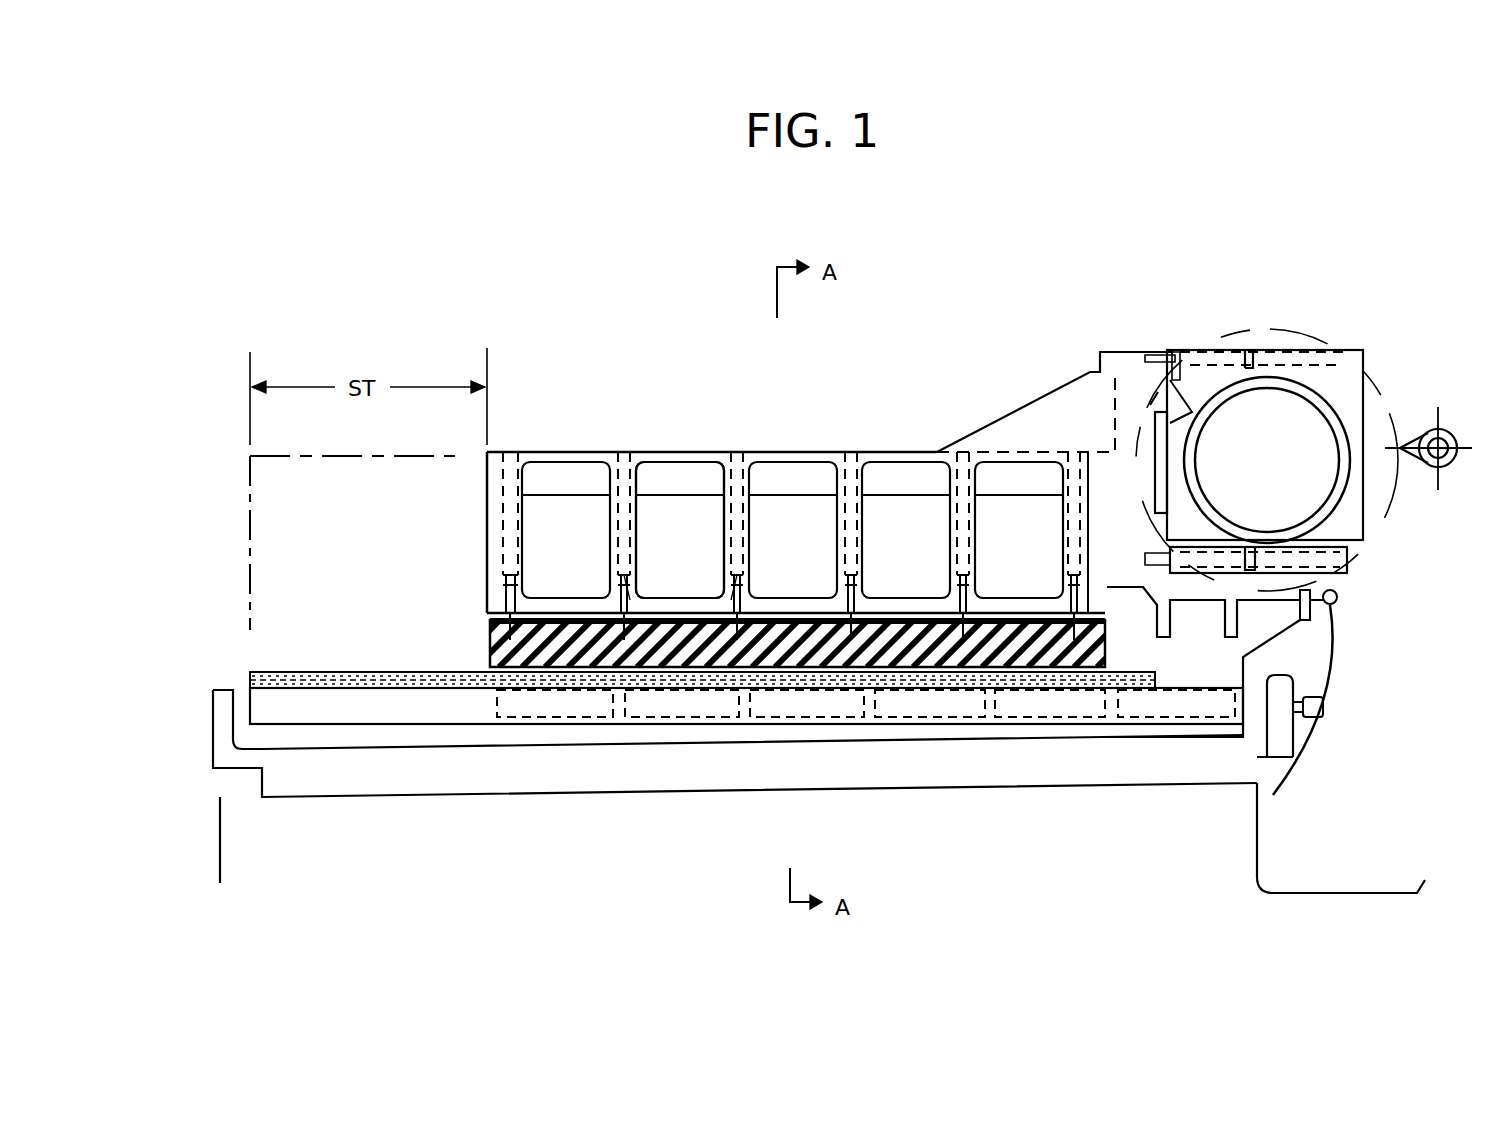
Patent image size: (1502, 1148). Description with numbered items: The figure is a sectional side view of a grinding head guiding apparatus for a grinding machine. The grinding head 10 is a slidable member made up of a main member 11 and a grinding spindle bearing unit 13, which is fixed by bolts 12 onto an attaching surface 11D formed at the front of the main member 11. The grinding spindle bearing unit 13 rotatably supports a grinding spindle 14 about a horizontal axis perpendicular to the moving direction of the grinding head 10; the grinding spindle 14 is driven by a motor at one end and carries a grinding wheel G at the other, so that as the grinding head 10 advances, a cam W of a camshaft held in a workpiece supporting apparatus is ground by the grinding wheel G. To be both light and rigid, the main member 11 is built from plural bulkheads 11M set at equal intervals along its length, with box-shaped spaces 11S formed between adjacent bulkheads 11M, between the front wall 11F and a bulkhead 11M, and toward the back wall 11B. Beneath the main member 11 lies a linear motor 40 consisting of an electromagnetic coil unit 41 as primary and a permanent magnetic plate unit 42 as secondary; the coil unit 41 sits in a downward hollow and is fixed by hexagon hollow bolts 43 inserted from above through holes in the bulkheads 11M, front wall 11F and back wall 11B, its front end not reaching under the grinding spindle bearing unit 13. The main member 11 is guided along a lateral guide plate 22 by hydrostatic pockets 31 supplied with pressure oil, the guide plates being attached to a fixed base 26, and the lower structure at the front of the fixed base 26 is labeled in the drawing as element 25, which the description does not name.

The grinding head 10 is at (893, 452).
The main member 11 is at (680, 460).
The back wall 11B is at (510, 488).
The box-shaped spaces 11S is at (668, 488).
The bulkheads 11M is at (848, 477).
The front wall 11F is at (1108, 468).
The attaching surface 11D is at (1170, 372).
The bolts 12 is at (1188, 352).
The grinding spindle bearing unit 13 is at (1337, 377).
The grinding spindle 14 is at (1310, 493).
The lateral guide plate 22 is at (365, 710).
The base 25 is at (1233, 862).
The fixed base 26 is at (932, 770).
The hydrostatic pockets 31 is at (765, 700).
The linear motor 40 is at (486, 667).
The electromagnetic coil unit 41 is at (540, 672).
The permanent magnetic plate unit 42 is at (450, 683).
The bolts 43 is at (735, 578).
The grinding wheel G is at (1392, 410).
The cam W is at (1422, 462).